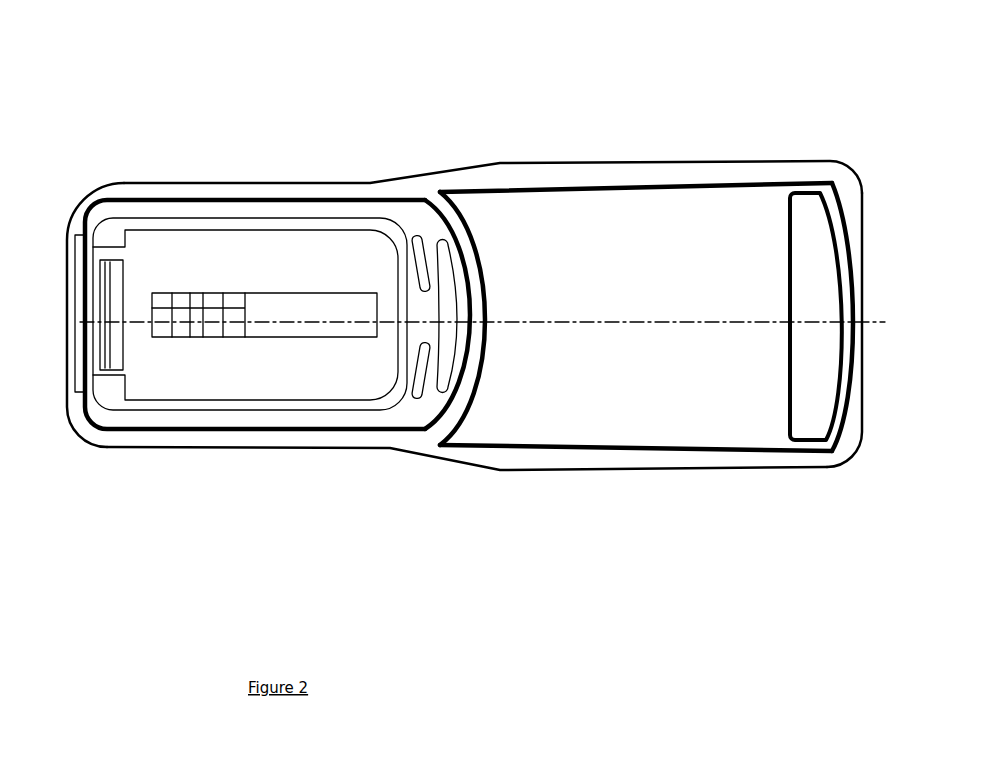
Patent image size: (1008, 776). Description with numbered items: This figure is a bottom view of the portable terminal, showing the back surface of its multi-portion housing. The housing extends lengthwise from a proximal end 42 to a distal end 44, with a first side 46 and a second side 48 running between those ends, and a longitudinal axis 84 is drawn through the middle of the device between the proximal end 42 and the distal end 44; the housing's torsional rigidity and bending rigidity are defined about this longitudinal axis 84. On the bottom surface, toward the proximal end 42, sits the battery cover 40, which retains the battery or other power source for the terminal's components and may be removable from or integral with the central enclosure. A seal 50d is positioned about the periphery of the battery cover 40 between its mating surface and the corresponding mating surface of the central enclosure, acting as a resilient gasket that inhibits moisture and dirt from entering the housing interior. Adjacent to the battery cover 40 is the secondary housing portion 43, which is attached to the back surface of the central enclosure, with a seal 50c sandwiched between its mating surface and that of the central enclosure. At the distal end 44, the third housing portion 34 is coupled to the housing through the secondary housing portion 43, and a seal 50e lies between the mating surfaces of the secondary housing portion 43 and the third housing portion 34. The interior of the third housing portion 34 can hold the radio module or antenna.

The third housing portion 34 is at (816, 316).
The battery cover 40 is at (264, 298).
The proximal end 42 is at (68, 194).
The secondary housing portion 43 is at (636, 314).
The distal end 44 is at (848, 163).
The first side 46 is at (578, 132).
The second side 48 is at (556, 490).
The seal 50c is at (728, 450).
The seal 50d is at (365, 198).
The seal 50e is at (823, 455).
The longitudinal axis 84 is at (708, 322).